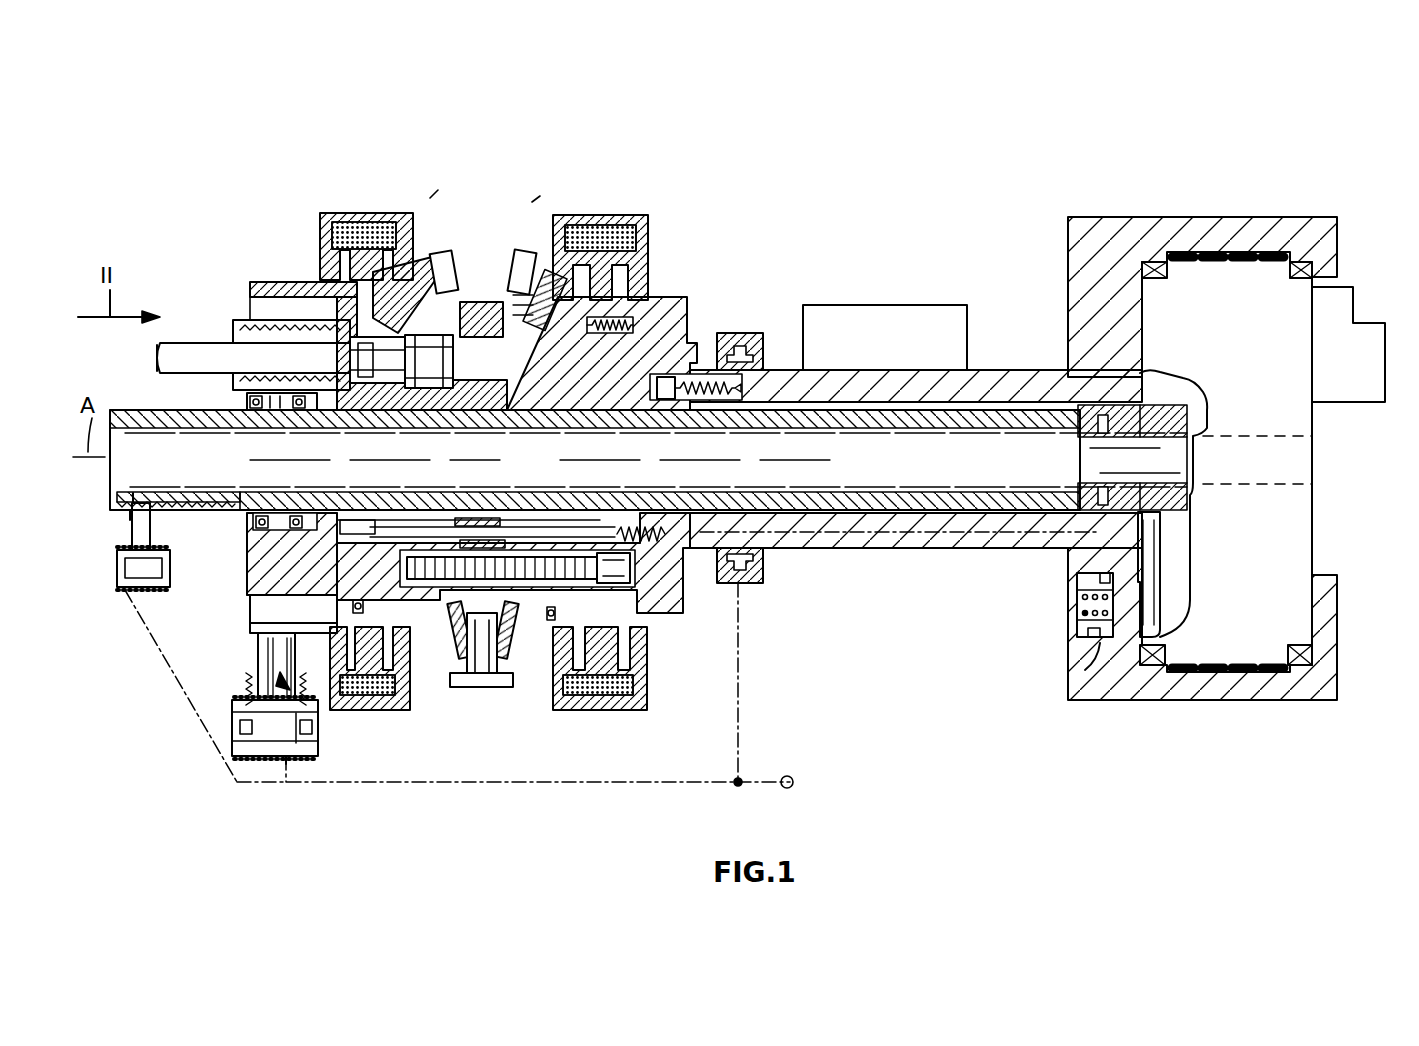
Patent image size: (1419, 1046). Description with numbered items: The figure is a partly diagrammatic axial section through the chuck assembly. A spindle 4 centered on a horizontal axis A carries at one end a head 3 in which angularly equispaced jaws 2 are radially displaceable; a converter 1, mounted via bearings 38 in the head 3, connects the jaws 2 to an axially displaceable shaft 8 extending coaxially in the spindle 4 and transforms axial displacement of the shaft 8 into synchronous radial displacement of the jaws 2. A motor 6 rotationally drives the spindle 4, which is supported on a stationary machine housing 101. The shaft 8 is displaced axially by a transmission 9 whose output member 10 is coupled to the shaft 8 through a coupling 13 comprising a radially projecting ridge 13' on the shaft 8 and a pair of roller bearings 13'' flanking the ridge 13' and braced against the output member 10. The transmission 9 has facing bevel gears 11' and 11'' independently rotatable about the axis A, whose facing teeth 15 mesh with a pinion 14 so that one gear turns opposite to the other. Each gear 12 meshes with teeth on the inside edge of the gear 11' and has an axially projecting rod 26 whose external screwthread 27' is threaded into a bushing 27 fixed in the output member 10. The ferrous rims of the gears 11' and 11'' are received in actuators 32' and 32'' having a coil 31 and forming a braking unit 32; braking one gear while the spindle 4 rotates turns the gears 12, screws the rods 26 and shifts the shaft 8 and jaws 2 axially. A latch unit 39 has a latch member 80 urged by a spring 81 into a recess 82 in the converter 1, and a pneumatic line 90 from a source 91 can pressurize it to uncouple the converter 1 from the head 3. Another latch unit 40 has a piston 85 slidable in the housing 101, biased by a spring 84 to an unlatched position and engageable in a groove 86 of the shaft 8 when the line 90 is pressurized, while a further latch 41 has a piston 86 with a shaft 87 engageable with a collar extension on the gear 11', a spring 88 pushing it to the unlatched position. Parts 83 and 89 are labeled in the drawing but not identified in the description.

The converter 1 is at (1282, 578).
The jaws 2 is at (1363, 333).
The head 3 is at (1115, 250).
The spindle 4 is at (645, 300).
The motor 6 is at (929, 318).
The shaft 8 is at (752, 500).
The transmission 9 is at (490, 690).
The output member 10 is at (250, 565).
The bevel gear 11' is at (446, 246).
The bevel gear 11'' is at (527, 257).
The gear 12 is at (432, 390).
The coupling 13 is at (309, 462).
The ridge 13' is at (275, 462).
The roller bearings 13'' is at (285, 442).
The pinion 14 is at (477, 663).
The teeth 15 is at (452, 258).
The rod 26 is at (190, 343).
The bushing 27 is at (281, 334).
The external screwthread 27' is at (157, 374).
The coil 31 is at (365, 215).
The braking unit 32 is at (485, 156).
The actuator 32' is at (602, 698).
The actuator 32'' is at (385, 698).
The bearings 38 is at (1250, 293).
The latch unit 39 is at (1105, 642).
The latch unit 40 is at (117, 513).
The latch 41 is at (318, 723).
The latch member 80 is at (1132, 607).
The spring 81 is at (1080, 612).
The recess 82 is at (1160, 583).
The pin 83 is at (1085, 632).
The spring 84 is at (165, 552).
The piston 85 is at (133, 570).
The groove 86 is at (133, 492).
The shaft 87 is at (262, 661).
The spring 88 is at (255, 692).
The foot 89 is at (262, 622).
The pneumatic line 90 is at (282, 760).
The source 91 is at (793, 785).
The machine housing 101 is at (232, 718).